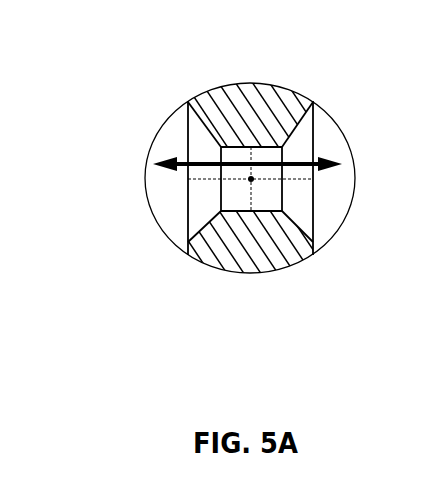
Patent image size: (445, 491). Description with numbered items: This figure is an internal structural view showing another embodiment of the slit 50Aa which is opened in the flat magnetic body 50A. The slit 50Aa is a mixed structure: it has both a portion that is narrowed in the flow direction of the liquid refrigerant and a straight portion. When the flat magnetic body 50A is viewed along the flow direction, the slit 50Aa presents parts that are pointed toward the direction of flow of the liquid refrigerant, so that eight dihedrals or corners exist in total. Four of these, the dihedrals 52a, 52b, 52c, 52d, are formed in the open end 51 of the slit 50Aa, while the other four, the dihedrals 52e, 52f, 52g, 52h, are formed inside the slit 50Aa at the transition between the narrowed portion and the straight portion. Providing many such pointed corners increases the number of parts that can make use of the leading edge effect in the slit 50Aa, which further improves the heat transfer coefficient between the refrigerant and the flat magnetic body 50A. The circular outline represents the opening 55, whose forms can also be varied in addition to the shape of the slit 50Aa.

The flat magnetic body 50A is at (242, 178).
The slit 50Aa is at (154, 161).
The open end 51 is at (242, 161).
The dihedral 52a is at (186, 124).
The dihedral 52b is at (173, 248).
The dihedral 52c is at (316, 118).
The dihedral 52d is at (316, 234).
The dihedral 52e is at (223, 102).
The dihedral 52f is at (218, 277).
The dihedral 52g is at (292, 87).
The dihedral 52h is at (282, 277).
The opening 55 is at (350, 213).